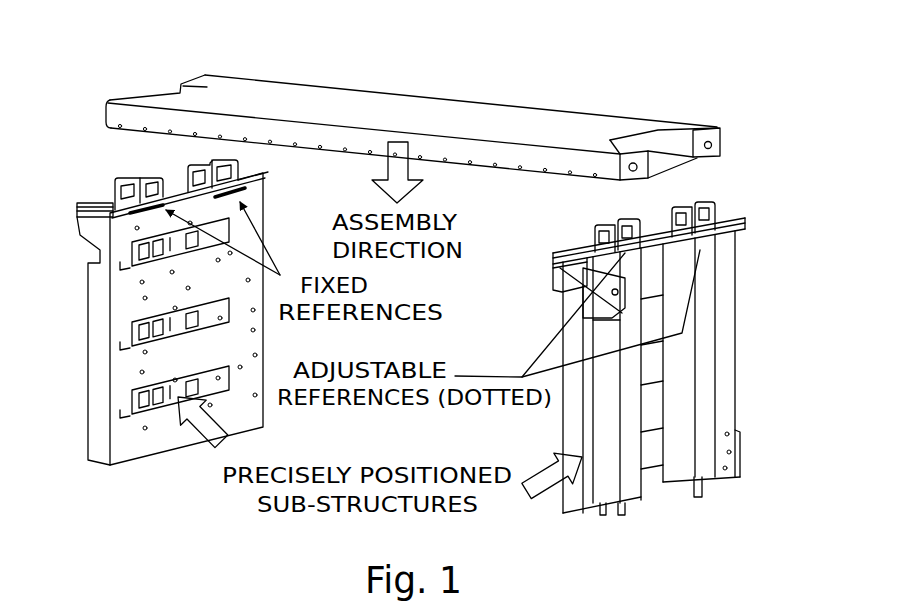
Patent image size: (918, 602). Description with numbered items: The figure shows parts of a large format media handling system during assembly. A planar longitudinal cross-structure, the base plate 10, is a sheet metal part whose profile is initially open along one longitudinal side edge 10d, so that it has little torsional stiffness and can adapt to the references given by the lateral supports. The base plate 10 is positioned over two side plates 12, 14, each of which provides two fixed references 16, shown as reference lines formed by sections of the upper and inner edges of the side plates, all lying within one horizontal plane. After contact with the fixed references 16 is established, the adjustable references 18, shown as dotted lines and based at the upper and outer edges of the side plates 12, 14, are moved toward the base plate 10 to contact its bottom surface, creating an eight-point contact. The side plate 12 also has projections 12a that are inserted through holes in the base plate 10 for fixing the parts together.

The base plate 10 is at (430, 118).
The longitudinal side edge 10d is at (538, 180).
The side plate 12 is at (705, 375).
The projections 12a is at (722, 212).
The side plate 14 is at (125, 380).
The fixed reference lines 16 is at (167, 208).
The adjustable references 18 is at (183, 185).